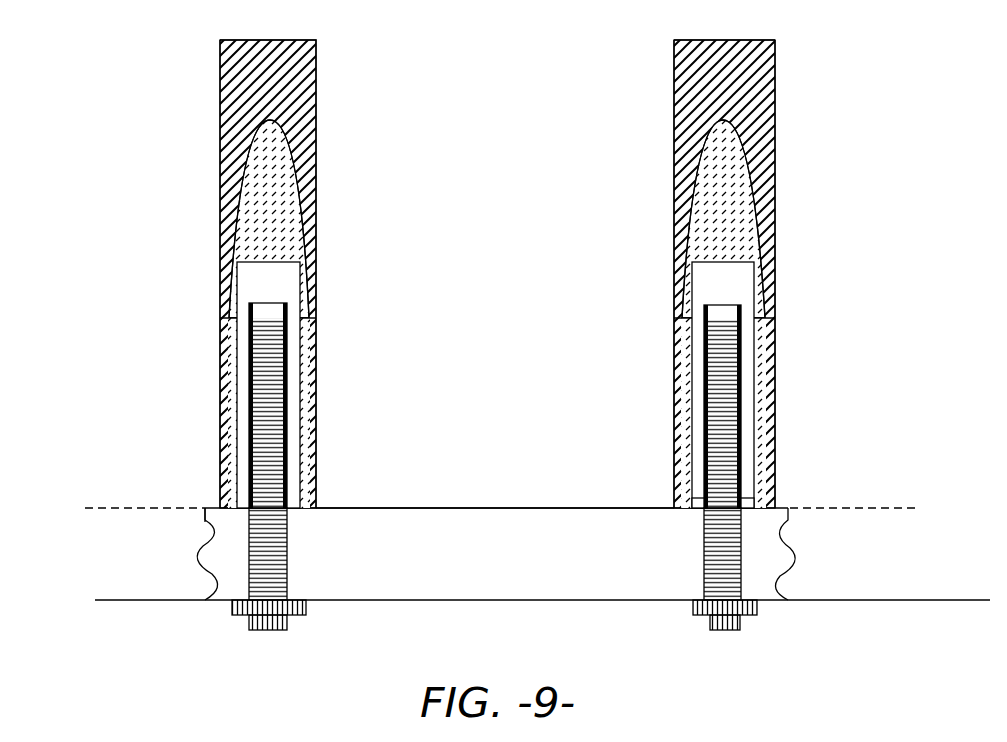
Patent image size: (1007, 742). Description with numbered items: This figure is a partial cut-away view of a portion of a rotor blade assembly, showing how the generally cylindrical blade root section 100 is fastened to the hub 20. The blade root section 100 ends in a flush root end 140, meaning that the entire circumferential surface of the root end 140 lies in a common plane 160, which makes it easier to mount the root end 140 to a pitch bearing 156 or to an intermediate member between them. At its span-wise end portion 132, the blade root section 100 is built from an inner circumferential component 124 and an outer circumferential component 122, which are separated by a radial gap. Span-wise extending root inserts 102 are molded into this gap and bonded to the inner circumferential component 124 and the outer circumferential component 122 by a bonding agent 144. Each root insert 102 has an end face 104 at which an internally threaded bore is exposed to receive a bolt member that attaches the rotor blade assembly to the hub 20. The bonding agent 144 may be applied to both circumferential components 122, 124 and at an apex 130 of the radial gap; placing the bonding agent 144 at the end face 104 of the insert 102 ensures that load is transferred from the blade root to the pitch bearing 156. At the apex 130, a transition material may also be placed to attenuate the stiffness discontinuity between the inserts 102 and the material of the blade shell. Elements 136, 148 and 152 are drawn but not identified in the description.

The hub 20 is at (118, 598).
The blade root section 100 is at (145, 124).
The root insert 102 is at (251, 335).
The end face 104 is at (227, 508).
The outer circumferential component 122 is at (775, 388).
The inner circumferential component 124 is at (674, 315).
The apex 130 is at (722, 121).
The span-wise end portion 132 is at (721, 335).
The base plate 136 is at (743, 502).
The root end 140 is at (507, 507).
The bonding agent 144 is at (275, 215).
The cavity 148 is at (738, 290).
The sleeve 152 is at (282, 340).
The pitch bearing 156 is at (528, 562).
The common plane 160 is at (895, 506).